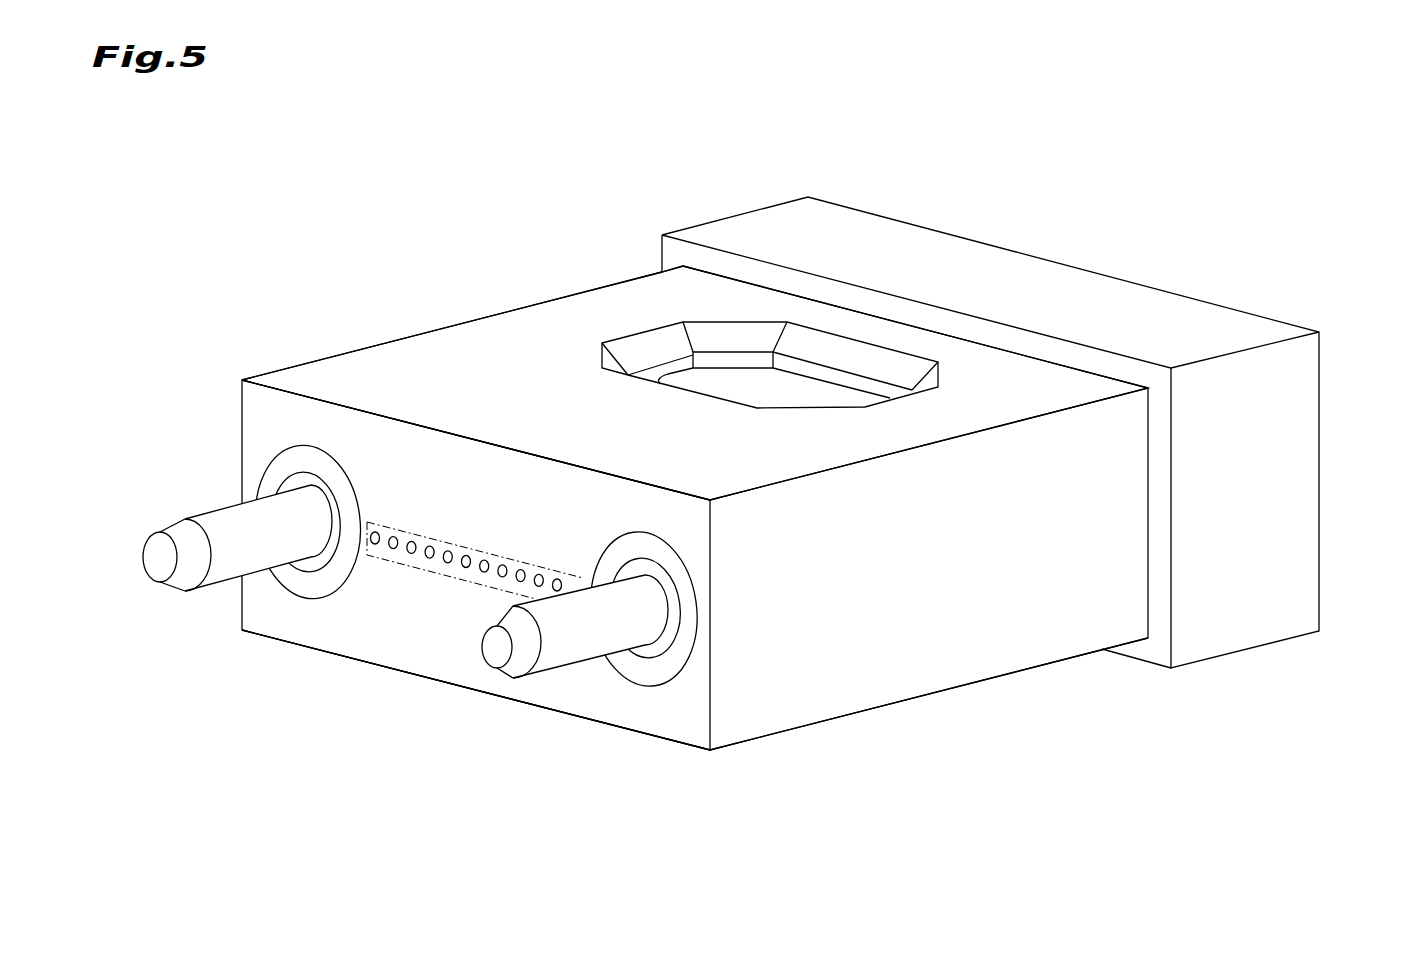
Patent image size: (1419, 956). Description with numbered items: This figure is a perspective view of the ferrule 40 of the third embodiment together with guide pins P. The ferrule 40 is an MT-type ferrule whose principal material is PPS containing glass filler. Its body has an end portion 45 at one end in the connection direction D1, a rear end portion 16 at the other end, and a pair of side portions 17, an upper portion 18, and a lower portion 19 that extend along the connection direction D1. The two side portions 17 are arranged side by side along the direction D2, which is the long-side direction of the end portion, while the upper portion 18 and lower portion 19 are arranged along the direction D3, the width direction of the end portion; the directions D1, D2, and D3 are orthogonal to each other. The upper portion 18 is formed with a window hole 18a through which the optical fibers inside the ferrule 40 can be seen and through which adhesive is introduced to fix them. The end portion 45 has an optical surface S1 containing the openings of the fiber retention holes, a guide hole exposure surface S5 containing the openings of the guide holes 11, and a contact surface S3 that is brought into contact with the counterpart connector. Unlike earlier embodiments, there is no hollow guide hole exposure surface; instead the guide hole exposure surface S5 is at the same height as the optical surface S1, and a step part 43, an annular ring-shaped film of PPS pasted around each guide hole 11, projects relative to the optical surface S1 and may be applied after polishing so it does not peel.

The ferrule 40 is at (817, 415).
The rear end portion 16 is at (1321, 394).
The side portion 17 is at (1042, 634).
The upper portion 18 is at (550, 312).
The window hole 18a is at (807, 370).
The lower portion 19 is at (808, 727).
The guide hole 11 is at (332, 535).
The step part 43 is at (268, 480).
The end portion 45 is at (396, 700).
The optical surface S1 is at (422, 530).
The contact surface S3 is at (450, 458).
The guide hole exposure surface S5 is at (322, 563).
The pin tip P is at (158, 567).
The connection direction D1 is at (988, 730).
The direction D2 is at (1225, 255).
The direction D3 is at (1373, 460).